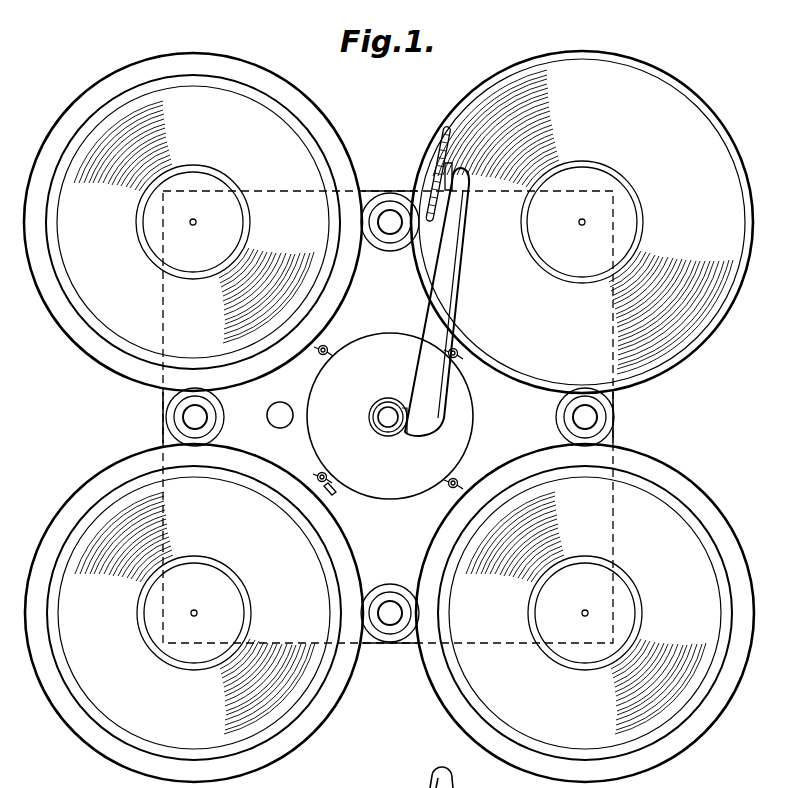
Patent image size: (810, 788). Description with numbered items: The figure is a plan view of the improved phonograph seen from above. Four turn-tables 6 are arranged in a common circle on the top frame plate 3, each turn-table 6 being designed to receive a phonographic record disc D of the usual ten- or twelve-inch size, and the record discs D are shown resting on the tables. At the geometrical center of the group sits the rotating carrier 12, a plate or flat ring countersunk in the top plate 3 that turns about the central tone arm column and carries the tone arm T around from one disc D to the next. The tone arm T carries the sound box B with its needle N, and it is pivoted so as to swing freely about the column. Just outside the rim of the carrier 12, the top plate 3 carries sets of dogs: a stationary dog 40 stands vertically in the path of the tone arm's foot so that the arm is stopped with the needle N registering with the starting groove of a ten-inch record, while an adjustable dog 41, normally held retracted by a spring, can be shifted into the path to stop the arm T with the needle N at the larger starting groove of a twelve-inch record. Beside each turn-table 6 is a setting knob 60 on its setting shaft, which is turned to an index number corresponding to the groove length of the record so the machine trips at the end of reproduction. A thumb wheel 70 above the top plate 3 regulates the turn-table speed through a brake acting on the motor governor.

The top frame plate 3 is at (615, 442).
The turn-table 6 is at (46, 148).
The phonographic record disc D is at (70, 280).
The setting knob 60 is at (391, 209).
The rotating carrier 12 is at (365, 346).
The thumb wheel 70 is at (276, 418).
The stationary dog 40 is at (318, 473).
The adjustable dog 41 is at (333, 494).
The tone arm T is at (446, 278).
The needle N is at (441, 153).
The sound box B is at (452, 178).